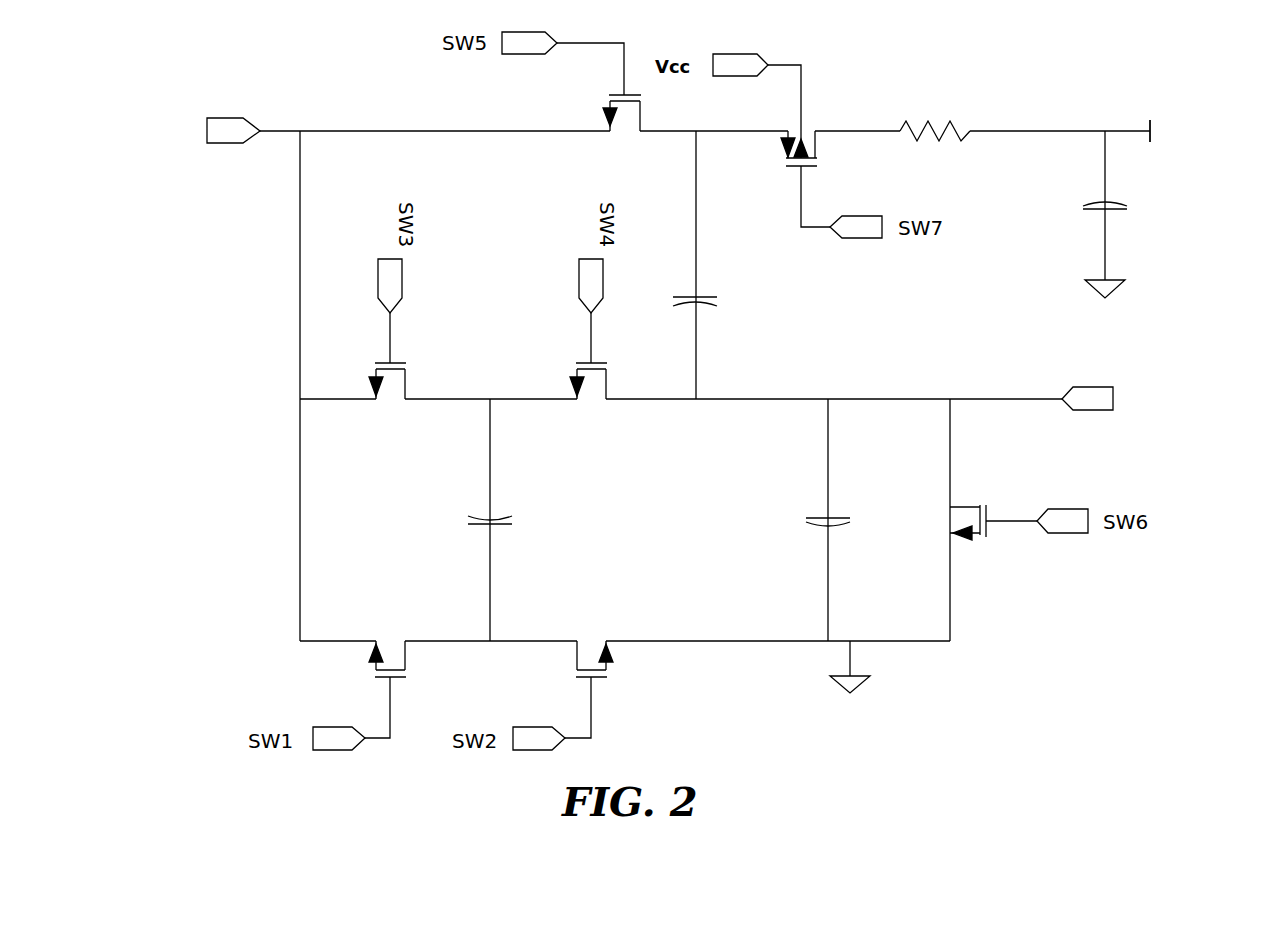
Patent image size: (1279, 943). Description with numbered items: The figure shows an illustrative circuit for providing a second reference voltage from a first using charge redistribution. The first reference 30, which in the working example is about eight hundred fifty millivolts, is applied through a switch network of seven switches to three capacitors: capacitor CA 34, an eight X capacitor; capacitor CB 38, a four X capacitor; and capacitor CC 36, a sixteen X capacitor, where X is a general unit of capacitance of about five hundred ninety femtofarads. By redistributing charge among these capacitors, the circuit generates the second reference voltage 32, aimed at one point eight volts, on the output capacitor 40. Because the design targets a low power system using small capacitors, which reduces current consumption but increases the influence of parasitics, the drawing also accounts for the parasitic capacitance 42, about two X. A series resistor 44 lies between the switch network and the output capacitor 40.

The first reference 30 is at (230, 112).
The second reference voltage 32 is at (1180, 150).
The capacitor CA 34 is at (500, 495).
The capacitor CC 36 is at (708, 313).
The capacitor CB 38 is at (805, 533).
The capacitor 40 is at (1120, 222).
The parasitic capacitance 42 is at (1090, 417).
The resistor 132K 44 is at (965, 103).